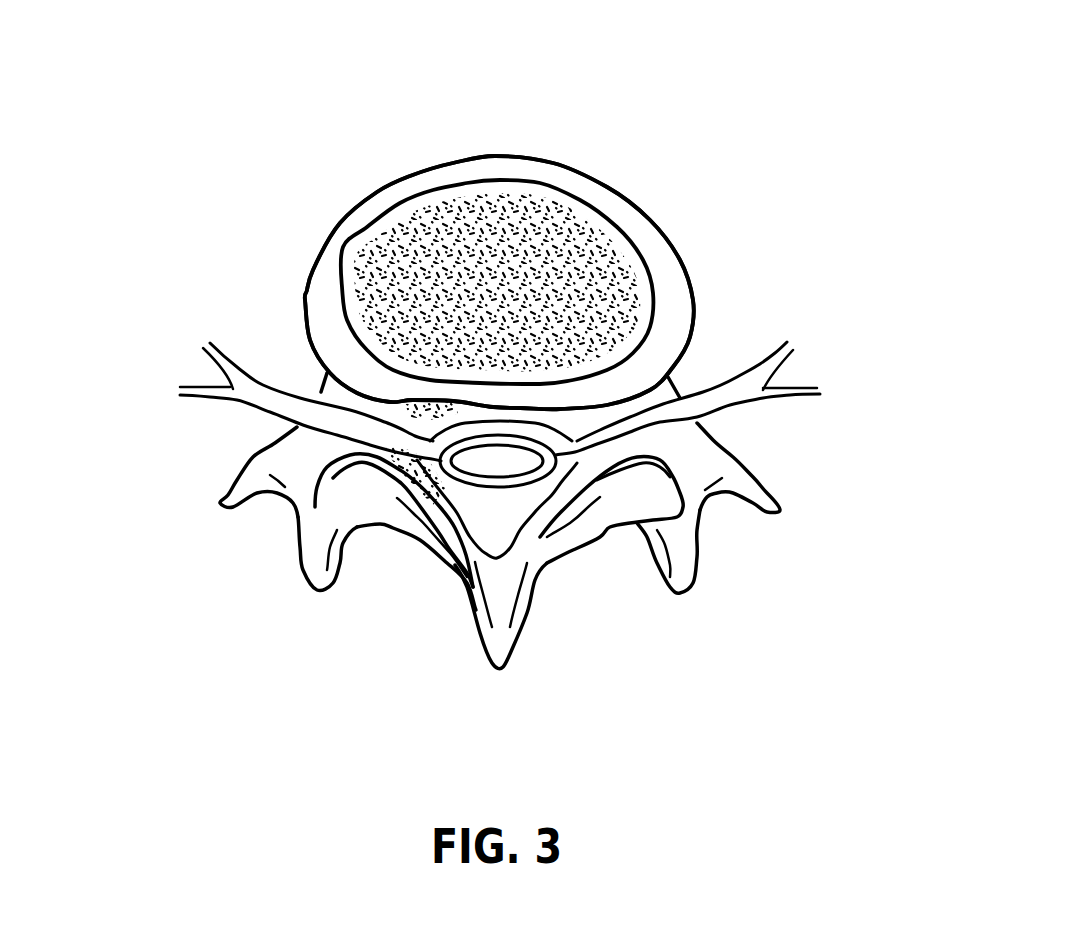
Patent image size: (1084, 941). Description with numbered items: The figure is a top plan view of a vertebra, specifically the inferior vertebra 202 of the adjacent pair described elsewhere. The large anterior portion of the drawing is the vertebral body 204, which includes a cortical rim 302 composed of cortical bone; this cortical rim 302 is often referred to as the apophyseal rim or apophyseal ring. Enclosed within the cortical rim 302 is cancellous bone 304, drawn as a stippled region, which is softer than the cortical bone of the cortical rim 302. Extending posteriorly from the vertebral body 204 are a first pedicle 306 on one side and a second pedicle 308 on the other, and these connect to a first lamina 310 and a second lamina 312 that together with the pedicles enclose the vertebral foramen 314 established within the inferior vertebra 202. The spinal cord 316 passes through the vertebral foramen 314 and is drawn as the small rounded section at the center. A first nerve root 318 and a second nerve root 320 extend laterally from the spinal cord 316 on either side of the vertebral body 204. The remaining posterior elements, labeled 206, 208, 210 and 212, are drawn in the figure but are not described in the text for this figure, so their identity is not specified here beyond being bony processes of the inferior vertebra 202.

The inferior vertebra 202 is at (632, 123).
The vertebral body 204 is at (668, 233).
The cortical rim 302 is at (320, 290).
The cancellous bone 304 is at (383, 268).
The first pedicle 306 is at (630, 413).
The second pedicle 308 is at (355, 407).
The first nerve root 318 is at (708, 402).
The second nerve root 320 is at (300, 412).
The transverse process 208 is at (222, 505).
The superior articular process 206 is at (336, 498).
The inferior articular process 212 is at (315, 575).
The second lamina 312 is at (418, 490).
The vertebral foramen 314 is at (467, 494).
The spinal cord 316 is at (497, 470).
The first lamina 310 is at (572, 488).
The spinous process 210 is at (498, 658).